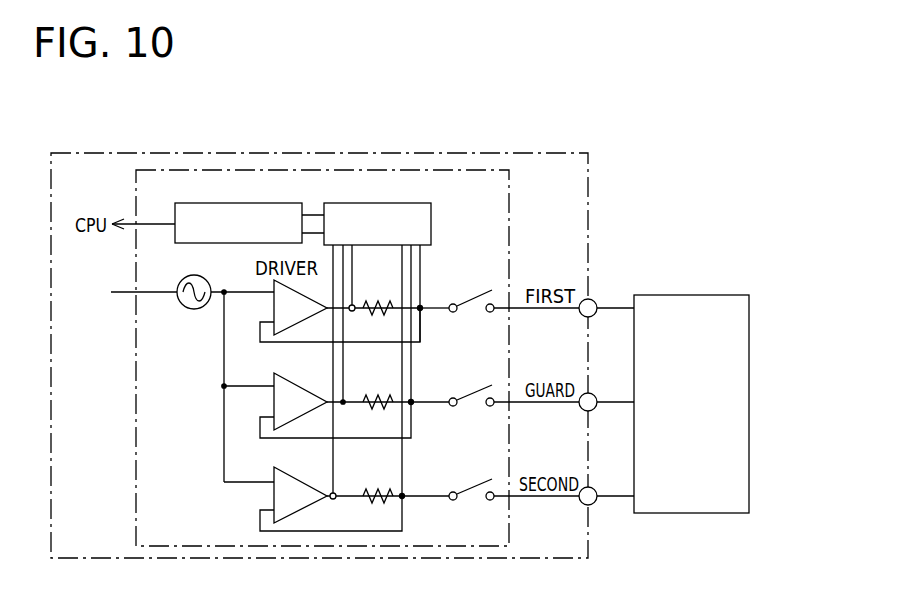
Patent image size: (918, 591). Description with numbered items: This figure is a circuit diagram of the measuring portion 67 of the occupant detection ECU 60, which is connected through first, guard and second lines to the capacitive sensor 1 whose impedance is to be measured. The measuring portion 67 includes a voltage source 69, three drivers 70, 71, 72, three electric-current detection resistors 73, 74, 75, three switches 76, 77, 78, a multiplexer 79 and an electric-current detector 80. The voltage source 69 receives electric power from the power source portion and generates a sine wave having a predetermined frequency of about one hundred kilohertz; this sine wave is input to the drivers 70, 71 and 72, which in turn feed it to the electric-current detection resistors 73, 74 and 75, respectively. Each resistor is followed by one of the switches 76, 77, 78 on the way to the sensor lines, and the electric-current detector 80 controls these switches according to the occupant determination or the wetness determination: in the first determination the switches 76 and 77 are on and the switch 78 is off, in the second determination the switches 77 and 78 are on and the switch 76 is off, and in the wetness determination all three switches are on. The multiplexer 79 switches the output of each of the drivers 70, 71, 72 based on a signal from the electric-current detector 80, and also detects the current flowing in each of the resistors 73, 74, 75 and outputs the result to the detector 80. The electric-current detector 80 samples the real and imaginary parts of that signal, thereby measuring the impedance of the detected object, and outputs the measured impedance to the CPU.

The capacitive sensor 1 is at (702, 295).
The occupant detection ECU 60 is at (576, 153).
The measuring portion 67 is at (495, 170).
The voltage source 69 is at (188, 310).
The driver 70 is at (274, 308).
The driver 71 is at (274, 401).
The driver 72 is at (274, 495).
The electric-current detection resistor 73 is at (378, 300).
The electric-current detection resistor 74 is at (378, 394).
The electric-current detection resistor 75 is at (378, 488).
The switch 76 is at (470, 298).
The switch 77 is at (470, 392).
The switch 78 is at (470, 486).
The multiplexer 79 is at (408, 203).
The electric-current detector 80 is at (174, 206).